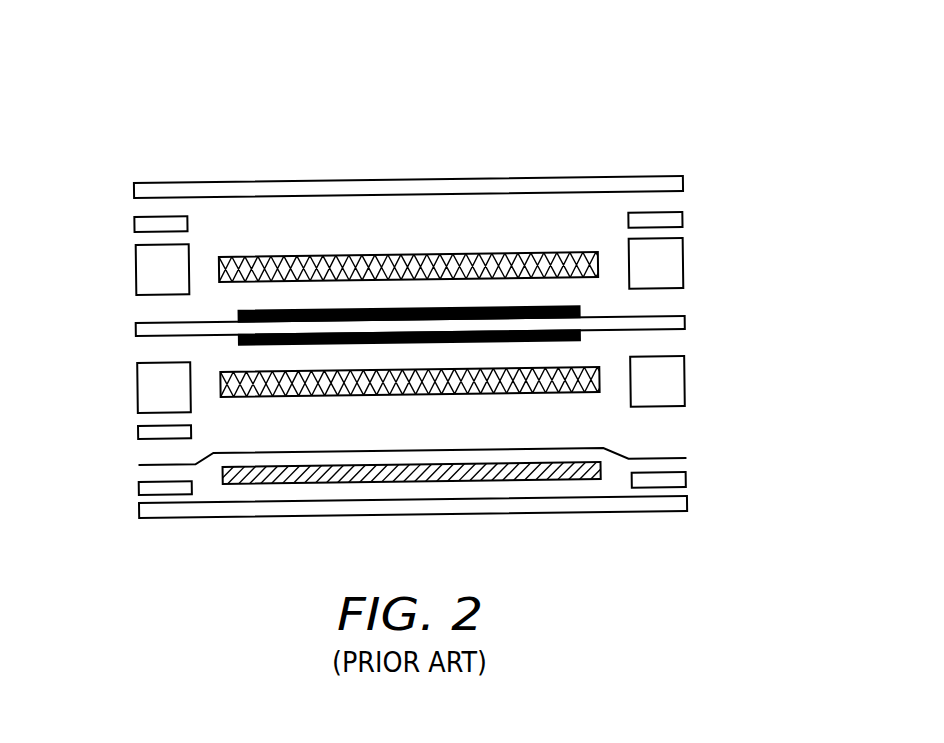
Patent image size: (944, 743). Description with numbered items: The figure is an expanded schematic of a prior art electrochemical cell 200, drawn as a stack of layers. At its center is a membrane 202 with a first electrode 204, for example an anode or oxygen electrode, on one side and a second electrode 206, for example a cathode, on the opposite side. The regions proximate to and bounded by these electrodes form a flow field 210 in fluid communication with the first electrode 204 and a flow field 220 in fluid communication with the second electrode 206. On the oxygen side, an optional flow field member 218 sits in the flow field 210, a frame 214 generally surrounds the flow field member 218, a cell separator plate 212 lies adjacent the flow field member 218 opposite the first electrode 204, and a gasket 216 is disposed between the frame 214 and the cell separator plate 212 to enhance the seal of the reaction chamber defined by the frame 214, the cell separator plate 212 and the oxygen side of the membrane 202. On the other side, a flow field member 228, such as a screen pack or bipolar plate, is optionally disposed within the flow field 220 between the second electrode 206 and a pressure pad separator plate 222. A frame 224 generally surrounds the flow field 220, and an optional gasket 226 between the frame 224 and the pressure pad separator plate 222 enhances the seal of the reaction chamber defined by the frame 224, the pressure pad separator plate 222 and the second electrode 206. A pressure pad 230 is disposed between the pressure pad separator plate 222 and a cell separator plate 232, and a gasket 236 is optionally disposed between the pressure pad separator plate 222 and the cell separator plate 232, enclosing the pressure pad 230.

The electrochemical cell 200 is at (173, 120).
The membrane 202 is at (683, 329).
The first electrode 204 is at (237, 313).
The second electrode 206 is at (237, 346).
The flow field 210 is at (417, 231).
The cell separator plate 212 is at (683, 190).
The frame 214 is at (683, 269).
The gasket 216 is at (134, 223).
The flow field member 218 is at (467, 259).
The flow field 220 is at (455, 444).
The pressure pad separator plate 222 is at (678, 464).
The frame 224 is at (683, 387).
The gasket 226 is at (135, 432).
The flow field member 228 is at (432, 375).
The pressure pad 230 is at (597, 485).
The cell separator plate 232 is at (683, 509).
The gasket 236 is at (135, 487).